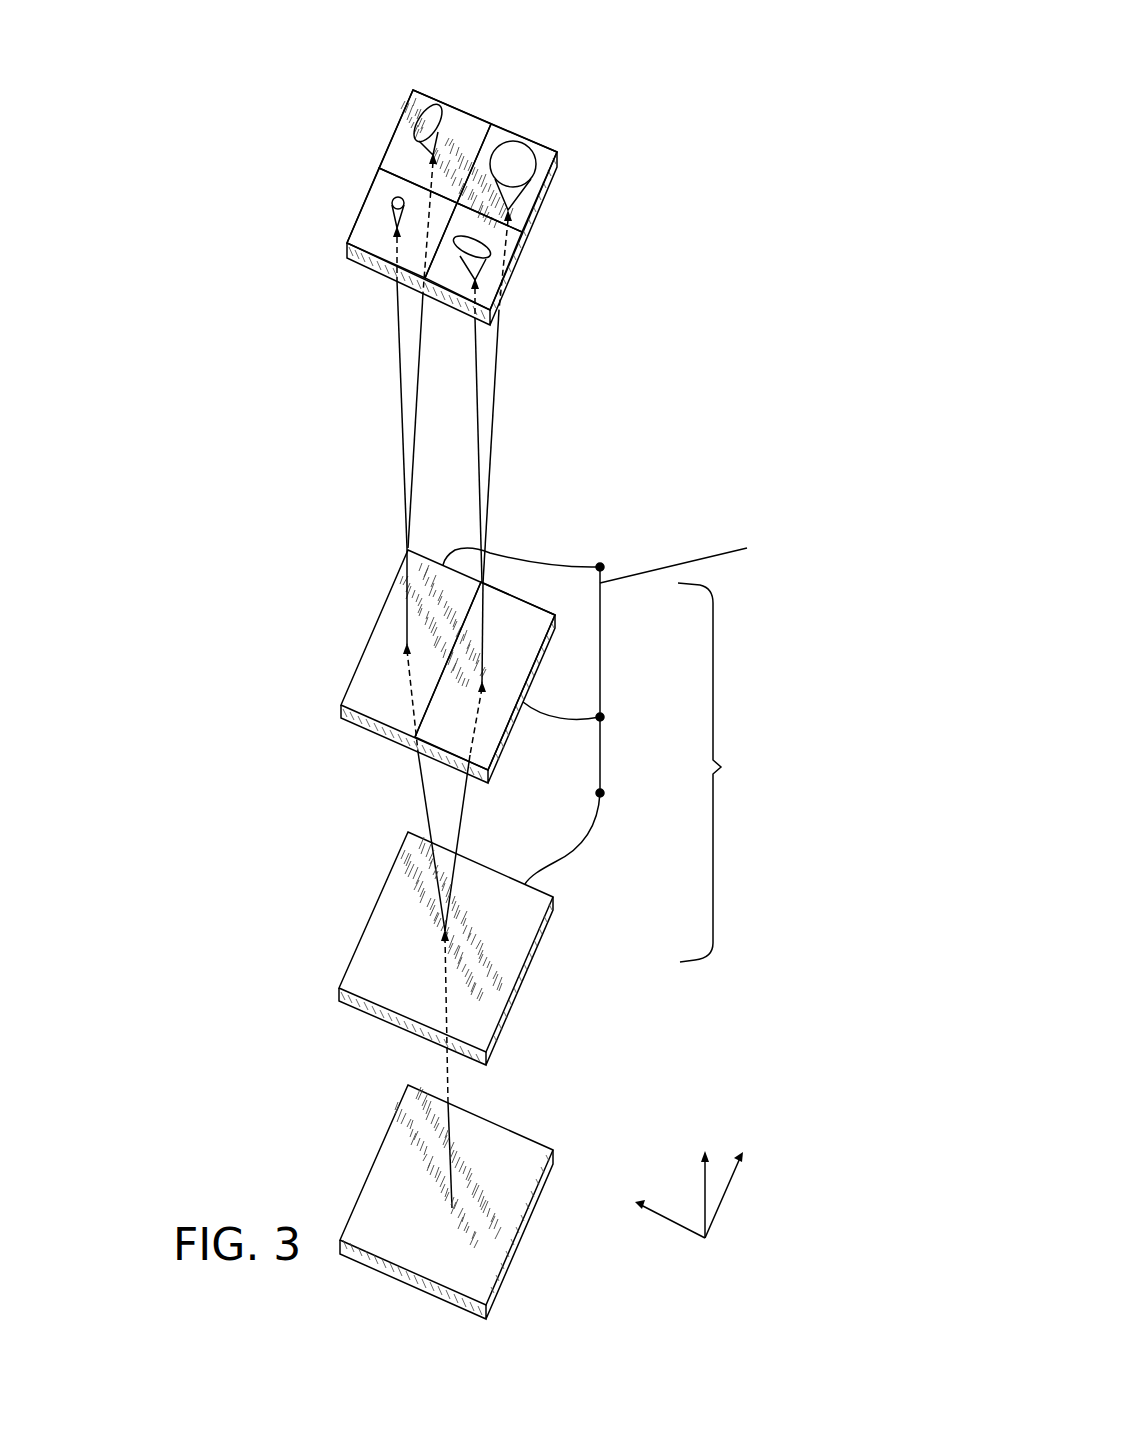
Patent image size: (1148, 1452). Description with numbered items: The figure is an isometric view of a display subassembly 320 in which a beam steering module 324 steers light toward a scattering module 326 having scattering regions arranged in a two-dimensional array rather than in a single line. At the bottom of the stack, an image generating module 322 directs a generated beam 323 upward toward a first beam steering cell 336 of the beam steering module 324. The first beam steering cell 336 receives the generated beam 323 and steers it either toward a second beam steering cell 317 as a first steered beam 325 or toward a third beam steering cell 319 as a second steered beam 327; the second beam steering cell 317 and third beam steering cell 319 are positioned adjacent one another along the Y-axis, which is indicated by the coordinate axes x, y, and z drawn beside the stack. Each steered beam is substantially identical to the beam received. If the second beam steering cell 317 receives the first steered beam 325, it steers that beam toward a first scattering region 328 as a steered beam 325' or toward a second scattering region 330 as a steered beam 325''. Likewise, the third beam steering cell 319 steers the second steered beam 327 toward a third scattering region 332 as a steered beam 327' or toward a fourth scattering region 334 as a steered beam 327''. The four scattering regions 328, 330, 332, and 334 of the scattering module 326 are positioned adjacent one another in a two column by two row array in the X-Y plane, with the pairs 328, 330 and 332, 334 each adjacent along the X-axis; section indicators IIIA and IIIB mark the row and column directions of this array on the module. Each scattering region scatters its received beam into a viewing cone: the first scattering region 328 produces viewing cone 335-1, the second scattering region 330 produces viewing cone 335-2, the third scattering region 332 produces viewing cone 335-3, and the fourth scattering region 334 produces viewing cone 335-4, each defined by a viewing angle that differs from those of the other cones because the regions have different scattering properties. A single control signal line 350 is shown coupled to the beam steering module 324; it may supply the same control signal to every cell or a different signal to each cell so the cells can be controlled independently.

The display subassembly 320 is at (245, 1051).
The image generating module 322 is at (552, 1281).
The generated beam 323 is at (449, 1084).
The beam steering module 324 is at (723, 772).
The first steered beam 325 is at (388, 739).
The steered beam 325' is at (357, 392).
The steered beam 325'' is at (442, 355).
The scattering module 326 is at (612, 200).
The second steered beam 327 is at (500, 757).
The steered beam 327' is at (454, 435).
The steered beam 327'' is at (545, 401).
The first scattering region 328 is at (355, 226).
The second scattering region 330 is at (456, 92).
The third scattering region 332 is at (518, 272).
The fourth scattering region 334 is at (552, 155).
The viewing cone 335-1 is at (396, 200).
The viewing cone 335-2 is at (430, 104).
The viewing cone 335-3 is at (465, 252).
The viewing cone 335-4 is at (518, 152).
The first beam steering cell 336 is at (555, 906).
The second beam steering cell 317 is at (367, 641).
The third beam steering cell 319 is at (508, 742).
The control signal line 350 is at (663, 567).
The section line IIIA is at (400, 87).
The section line IIIB is at (421, 72).
The x axis x is at (731, 1195).
The y axis y is at (670, 1211).
The z axis z is at (704, 1182).